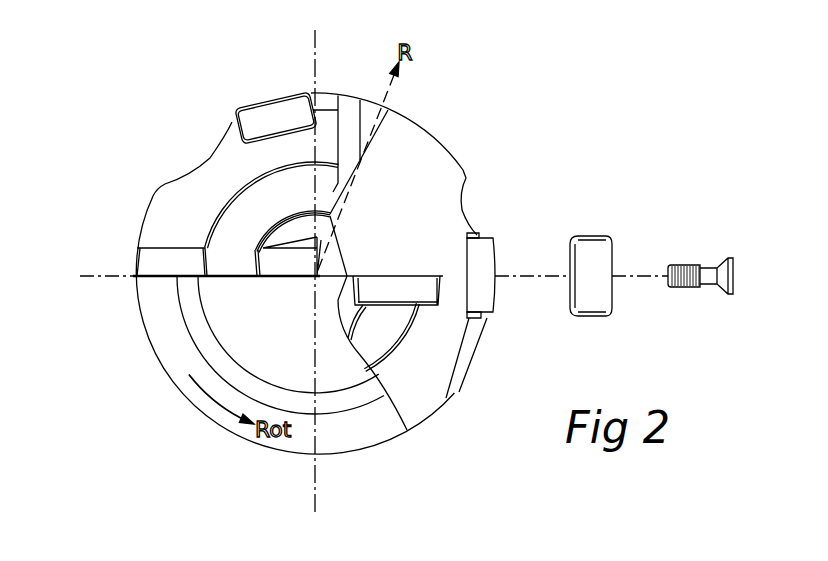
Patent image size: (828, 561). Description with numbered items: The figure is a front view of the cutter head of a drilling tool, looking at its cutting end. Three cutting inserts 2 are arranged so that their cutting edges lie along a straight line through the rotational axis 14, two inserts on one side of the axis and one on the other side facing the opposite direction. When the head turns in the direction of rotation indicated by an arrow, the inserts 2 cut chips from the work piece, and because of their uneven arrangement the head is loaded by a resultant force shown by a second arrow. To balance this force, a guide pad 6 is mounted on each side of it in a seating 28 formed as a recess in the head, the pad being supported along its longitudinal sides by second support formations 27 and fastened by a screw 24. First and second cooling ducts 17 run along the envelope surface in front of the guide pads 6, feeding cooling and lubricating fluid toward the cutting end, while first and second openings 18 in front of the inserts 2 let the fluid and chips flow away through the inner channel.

The cutting insert 2 is at (148, 263).
The guide pad 6 is at (268, 117).
The rotational axis 14 is at (318, 280).
The cooling duct 17 is at (190, 139).
The opening 18 is at (369, 240).
The screw 24 is at (683, 268).
The second support formation 27 is at (470, 235).
The seating 28 is at (484, 289).